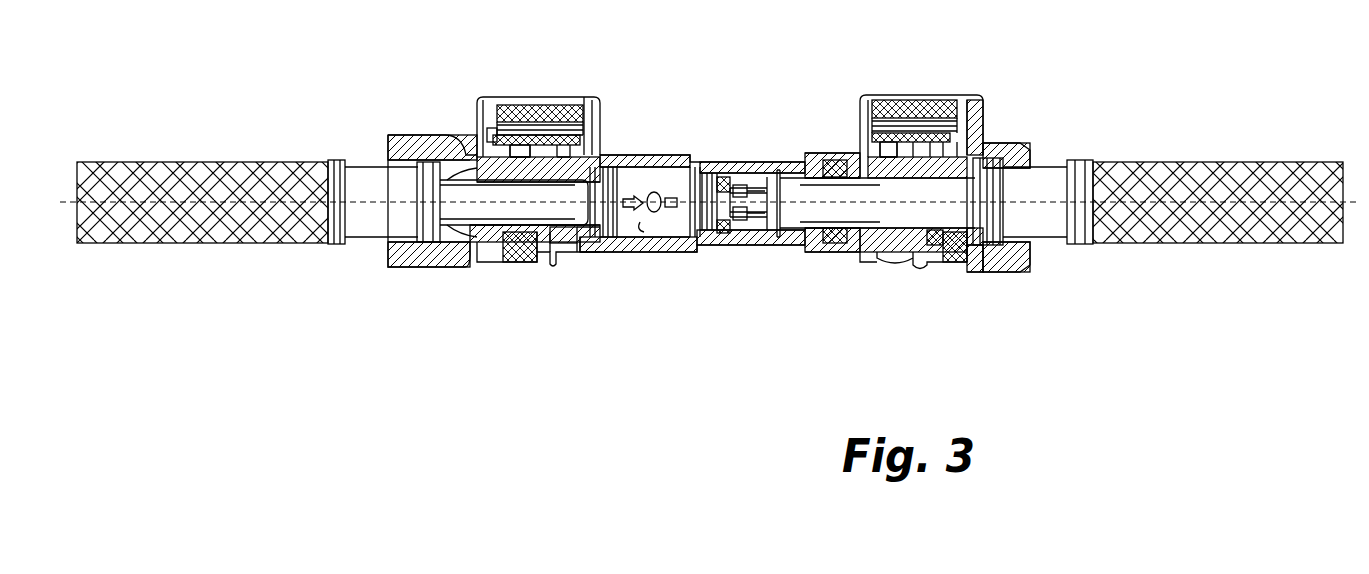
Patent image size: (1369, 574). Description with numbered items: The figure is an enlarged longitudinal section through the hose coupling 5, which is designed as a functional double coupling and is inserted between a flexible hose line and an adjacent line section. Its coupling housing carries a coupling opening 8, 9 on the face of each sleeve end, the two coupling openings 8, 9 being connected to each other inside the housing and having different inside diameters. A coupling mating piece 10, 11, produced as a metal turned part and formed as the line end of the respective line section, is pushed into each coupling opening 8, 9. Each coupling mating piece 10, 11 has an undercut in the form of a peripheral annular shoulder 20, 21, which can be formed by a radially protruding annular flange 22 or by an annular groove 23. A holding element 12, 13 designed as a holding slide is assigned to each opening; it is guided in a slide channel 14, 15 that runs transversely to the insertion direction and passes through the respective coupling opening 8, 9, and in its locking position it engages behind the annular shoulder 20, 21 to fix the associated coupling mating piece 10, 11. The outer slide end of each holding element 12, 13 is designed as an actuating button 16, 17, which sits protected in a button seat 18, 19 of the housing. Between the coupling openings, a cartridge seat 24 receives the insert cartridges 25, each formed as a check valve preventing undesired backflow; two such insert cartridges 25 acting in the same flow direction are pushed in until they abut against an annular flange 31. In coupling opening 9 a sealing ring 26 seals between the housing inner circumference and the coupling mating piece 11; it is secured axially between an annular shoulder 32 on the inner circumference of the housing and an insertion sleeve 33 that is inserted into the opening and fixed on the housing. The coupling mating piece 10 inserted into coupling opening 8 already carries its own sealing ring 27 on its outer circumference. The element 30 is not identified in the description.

The hose coupling 5 is at (752, 70).
The coupling opening 8 is at (388, 150).
The coupling opening 9 is at (1015, 146).
The coupling mating piece 10 is at (487, 260).
The coupling mating piece 11 is at (863, 253).
The holding element 12 is at (493, 133).
The holding element 13 is at (990, 130).
The slide channel 14 is at (507, 247).
The slide channel 15 is at (940, 245).
The actuating button 16 is at (565, 100).
The actuating button 17 is at (915, 105).
The button seat 18 is at (600, 100).
The button seat 19 is at (862, 124).
The annular shoulder 20 is at (527, 177).
The annular shoulder 21 is at (985, 148).
The annular flange 22 is at (907, 240).
The annular groove 23 is at (508, 105).
The cartridge seat 24 is at (630, 228).
The insert cartridge 25 is at (640, 180).
The sealing ring 26 is at (837, 241).
The sealing ring 27 is at (562, 237).
The locking ring 30 is at (573, 112).
The annular flange 31 is at (673, 222).
The annular shoulder 32 is at (833, 185).
The insertion sleeve 33 is at (890, 107).